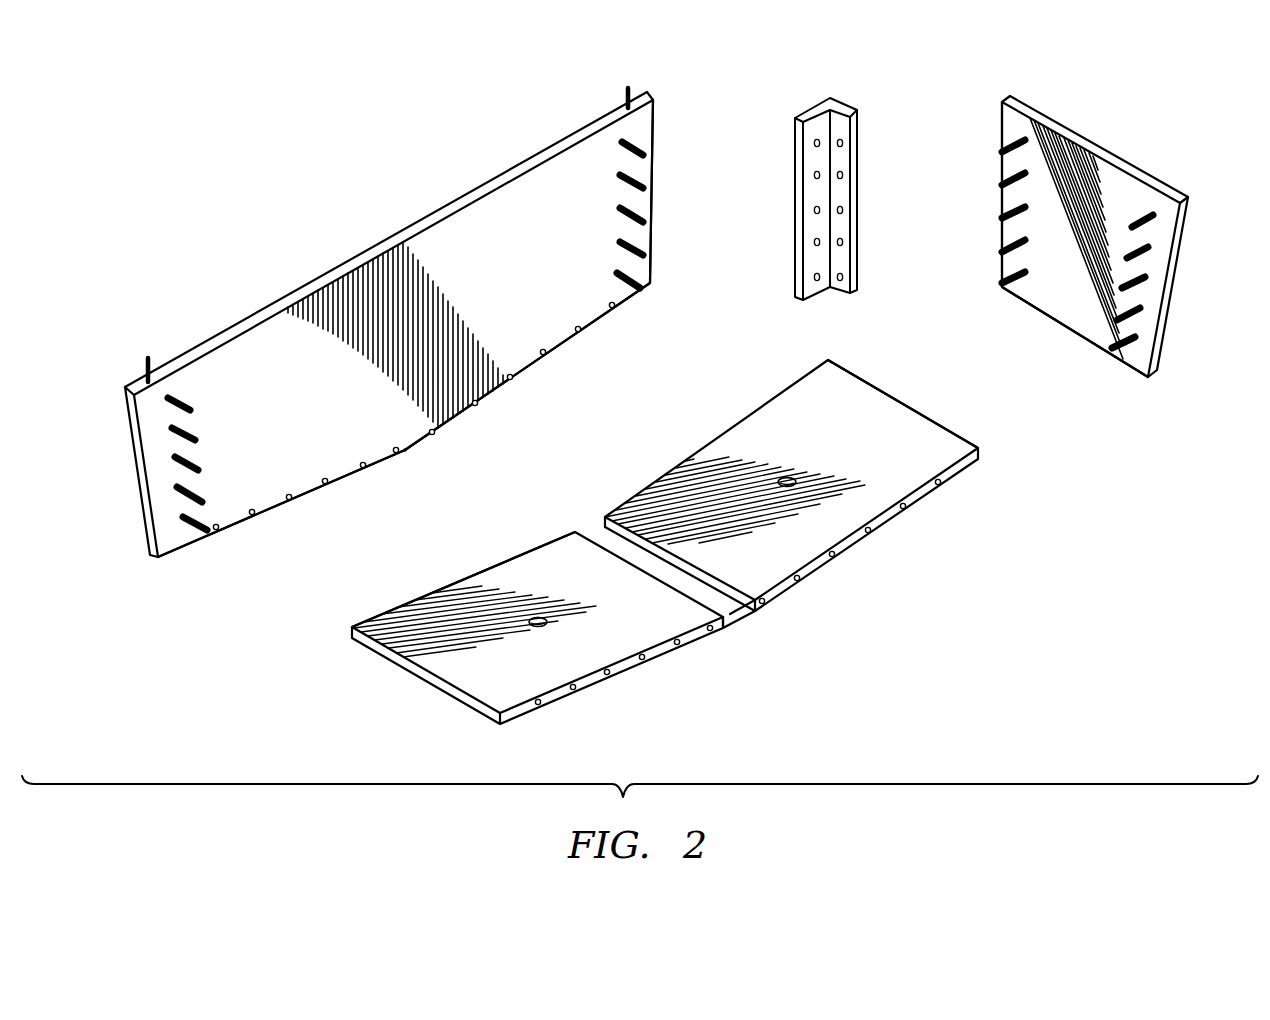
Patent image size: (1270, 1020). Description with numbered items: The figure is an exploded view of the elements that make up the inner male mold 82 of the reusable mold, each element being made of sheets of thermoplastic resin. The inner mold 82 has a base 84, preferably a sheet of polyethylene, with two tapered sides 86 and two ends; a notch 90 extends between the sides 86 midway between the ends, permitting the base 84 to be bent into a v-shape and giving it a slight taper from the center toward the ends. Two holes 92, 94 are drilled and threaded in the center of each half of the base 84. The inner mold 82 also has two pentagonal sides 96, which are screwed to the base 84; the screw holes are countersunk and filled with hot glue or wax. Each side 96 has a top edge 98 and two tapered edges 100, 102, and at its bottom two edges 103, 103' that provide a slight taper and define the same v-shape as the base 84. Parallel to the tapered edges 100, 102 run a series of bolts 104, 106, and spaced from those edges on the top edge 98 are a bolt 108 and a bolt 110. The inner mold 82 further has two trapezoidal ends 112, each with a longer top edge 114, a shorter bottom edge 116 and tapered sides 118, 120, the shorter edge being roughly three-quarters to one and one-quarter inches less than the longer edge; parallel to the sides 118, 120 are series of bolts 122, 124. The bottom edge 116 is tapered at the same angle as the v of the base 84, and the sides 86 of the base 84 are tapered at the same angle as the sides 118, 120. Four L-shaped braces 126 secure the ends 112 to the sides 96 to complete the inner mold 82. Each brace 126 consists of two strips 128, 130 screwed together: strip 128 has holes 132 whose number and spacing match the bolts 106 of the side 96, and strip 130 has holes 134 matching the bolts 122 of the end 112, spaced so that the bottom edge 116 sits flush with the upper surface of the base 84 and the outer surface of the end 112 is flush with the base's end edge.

The inner male mold 82 is at (395, 305).
The base 84 is at (523, 619).
The sides of base 86 is at (791, 506).
The notch 90 is at (598, 525).
The hole 92 is at (534, 628).
The hole 94 is at (790, 490).
The pentagonal sides 96 is at (530, 196).
The top edge 98 is at (482, 187).
The tapered edge 100 is at (135, 462).
The tapered edge 102 is at (656, 175).
The bottom edge 103 is at (281, 502).
The bottom edge 103' is at (527, 366).
The bolts 104 is at (198, 467).
The bolts 106 is at (630, 250).
The bolt 108 is at (144, 370).
The bolt 110 is at (624, 98).
The trapezoidal ends 112 is at (1093, 220).
The top edge 114 is at (1046, 108).
The bottom edge 116 is at (1045, 318).
The tapered side 118 is at (1002, 160).
The tapered side 120 is at (1176, 302).
The bolts 122 is at (1002, 282).
The bolts 124 is at (1135, 318).
The L-shaped braces 126 is at (827, 169).
The strip 128 is at (800, 236).
The strip 130 is at (858, 236).
The holes 132 is at (814, 210).
The holes 134 is at (843, 210).